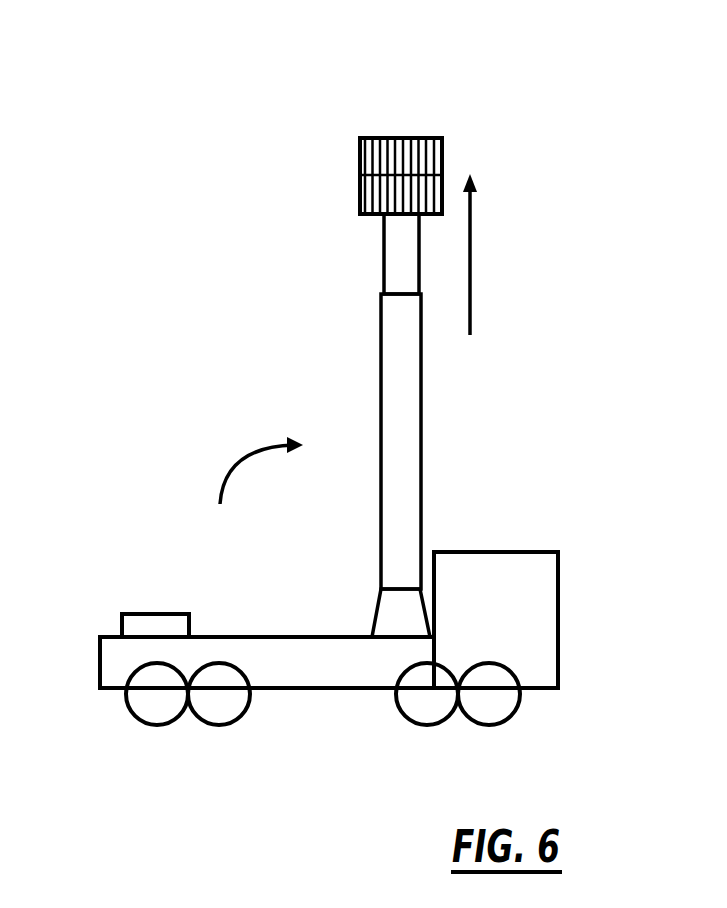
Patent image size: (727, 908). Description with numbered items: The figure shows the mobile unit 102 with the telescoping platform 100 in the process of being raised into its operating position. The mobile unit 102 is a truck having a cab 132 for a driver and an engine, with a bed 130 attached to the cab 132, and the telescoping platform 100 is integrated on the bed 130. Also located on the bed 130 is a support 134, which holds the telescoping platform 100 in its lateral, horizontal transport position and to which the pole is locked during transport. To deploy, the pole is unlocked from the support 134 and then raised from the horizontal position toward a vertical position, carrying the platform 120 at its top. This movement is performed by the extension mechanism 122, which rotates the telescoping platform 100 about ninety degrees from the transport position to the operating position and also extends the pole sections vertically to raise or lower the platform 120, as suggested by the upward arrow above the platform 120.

The telescoping platform 100 is at (431, 118).
The mobile unit 102 is at (557, 509).
The platform 120 is at (352, 163).
The extension mechanism 122 is at (373, 628).
The bed 130 is at (281, 646).
The cab 132 is at (558, 608).
The support 134 is at (145, 622).